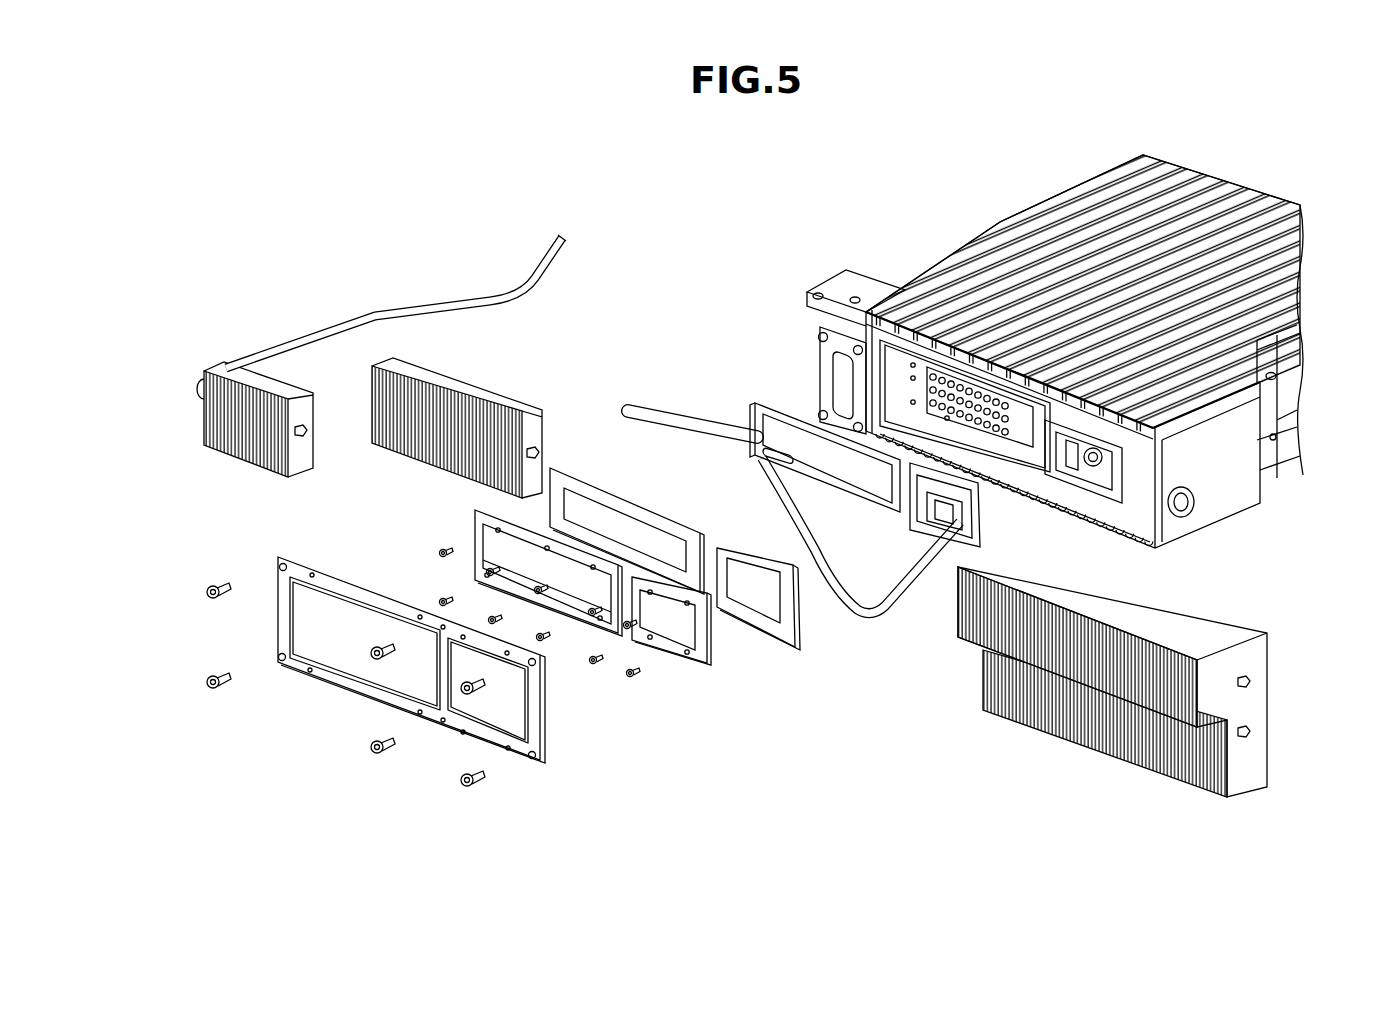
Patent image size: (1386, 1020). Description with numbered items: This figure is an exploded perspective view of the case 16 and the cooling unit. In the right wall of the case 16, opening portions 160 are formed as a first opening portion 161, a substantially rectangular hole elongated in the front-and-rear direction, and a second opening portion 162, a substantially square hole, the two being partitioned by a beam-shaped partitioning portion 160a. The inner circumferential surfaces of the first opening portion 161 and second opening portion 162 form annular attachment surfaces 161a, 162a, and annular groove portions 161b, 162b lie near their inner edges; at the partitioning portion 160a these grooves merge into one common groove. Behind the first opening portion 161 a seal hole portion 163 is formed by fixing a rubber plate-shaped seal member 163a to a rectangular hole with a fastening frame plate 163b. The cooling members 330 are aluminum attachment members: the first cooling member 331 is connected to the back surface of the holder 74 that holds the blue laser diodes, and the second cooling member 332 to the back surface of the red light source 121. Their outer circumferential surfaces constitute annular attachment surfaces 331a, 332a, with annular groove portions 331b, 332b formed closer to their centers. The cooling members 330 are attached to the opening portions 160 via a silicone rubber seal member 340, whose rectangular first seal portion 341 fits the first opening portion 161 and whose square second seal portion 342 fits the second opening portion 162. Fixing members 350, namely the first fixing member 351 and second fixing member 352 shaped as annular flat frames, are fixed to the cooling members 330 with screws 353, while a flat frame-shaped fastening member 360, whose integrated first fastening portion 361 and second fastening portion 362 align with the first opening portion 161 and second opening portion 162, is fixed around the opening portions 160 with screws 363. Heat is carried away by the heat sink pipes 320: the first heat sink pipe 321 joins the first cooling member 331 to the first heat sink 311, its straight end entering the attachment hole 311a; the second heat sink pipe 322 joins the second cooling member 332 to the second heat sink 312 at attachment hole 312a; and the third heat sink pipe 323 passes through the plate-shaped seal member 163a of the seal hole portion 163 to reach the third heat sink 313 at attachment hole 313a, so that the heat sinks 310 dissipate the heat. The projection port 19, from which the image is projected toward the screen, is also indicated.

The case 16 is at (1031, 178).
The opening portions 160 is at (1043, 359).
The beam-shaped partitioning portion 160a is at (1052, 363).
The first opening portion 161 is at (900, 366).
The annular attachment surface 161a is at (815, 292).
The annular groove portion 161b is at (856, 296).
The second opening portion 162 is at (1111, 498).
The annular attachment surface 162a is at (1080, 455).
The annular groove portion 162b is at (1105, 528).
The seal hole portion 163 is at (798, 340).
The plate-shaped seal member 163a is at (840, 380).
The fastening frame plate 163b is at (823, 400).
The holder 74 is at (975, 384).
The projection port 19 is at (1293, 397).
The red light source 121 is at (1197, 508).
The heat sinks 310 is at (740, 556).
The first heat sink 311 is at (1159, 682).
The attachment hole 311a is at (1251, 680).
The second heat sink 312 is at (491, 407).
The attachment hole 312a is at (533, 450).
The third heat sink 313 is at (225, 445).
The attachment hole 313a is at (301, 437).
The heat sink pipes 320 is at (593, 424).
The first heat sink pipe 321 is at (622, 406).
The second heat sink pipe 322 is at (817, 588).
The third heat sink pipe 323 is at (407, 307).
The cooling members 330 is at (856, 467).
The first cooling member 331 is at (768, 395).
The annular attachment surface 331a is at (762, 400).
The annular groove portion 331b is at (748, 420).
The second cooling member 332 is at (952, 559).
The annular attachment surface 332a is at (995, 505).
The annular groove portion 332b is at (913, 466).
The seal member 340 is at (698, 580).
The first seal portion 341 is at (622, 503).
The second seal portion 342 is at (737, 548).
The fixing members 350 is at (558, 636).
The first fixing member 351 is at (476, 517).
The second fixing member 352 is at (697, 667).
The screws 353 is at (635, 673).
The fastening member 360 is at (417, 702).
The first fastening portion 361 is at (323, 677).
The second fastening portion 362 is at (530, 700).
The screws 363 is at (467, 790).